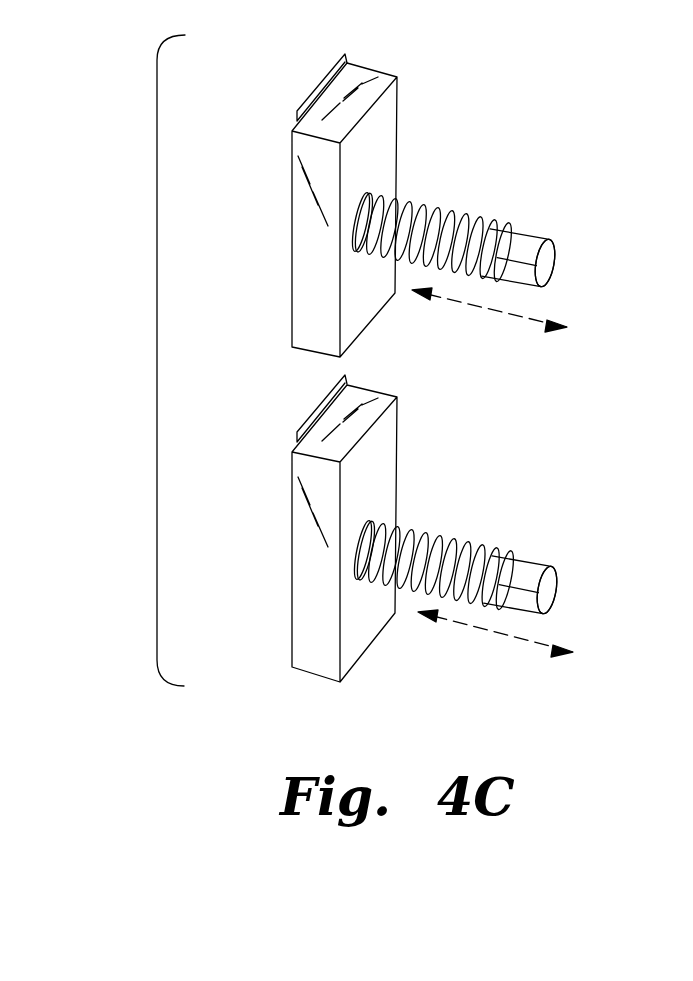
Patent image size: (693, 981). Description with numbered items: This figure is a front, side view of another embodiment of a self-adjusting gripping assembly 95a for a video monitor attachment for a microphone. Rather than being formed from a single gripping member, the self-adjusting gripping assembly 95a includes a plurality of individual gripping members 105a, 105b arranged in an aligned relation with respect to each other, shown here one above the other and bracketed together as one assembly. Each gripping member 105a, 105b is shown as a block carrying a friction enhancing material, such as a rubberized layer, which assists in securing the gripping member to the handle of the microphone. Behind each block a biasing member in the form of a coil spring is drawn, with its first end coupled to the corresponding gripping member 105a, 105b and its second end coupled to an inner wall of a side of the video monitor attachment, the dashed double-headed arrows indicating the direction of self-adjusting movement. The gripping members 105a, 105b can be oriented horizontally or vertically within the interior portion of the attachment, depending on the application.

The self-adjusting gripping assembly 95a is at (157, 375).
The gripping member 105a is at (292, 258).
The gripping member 105b is at (292, 578).